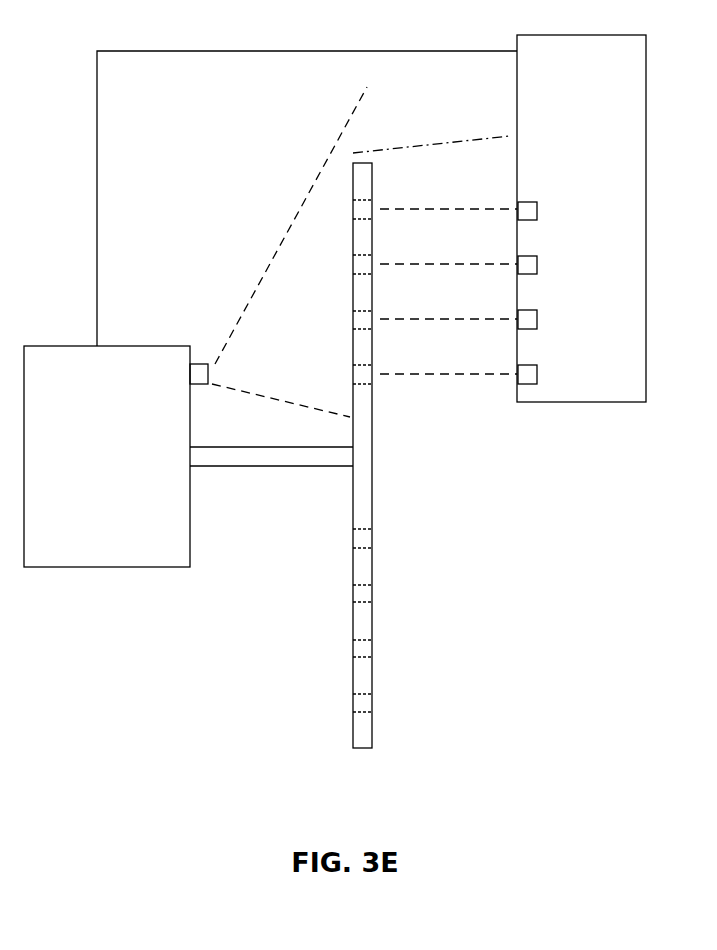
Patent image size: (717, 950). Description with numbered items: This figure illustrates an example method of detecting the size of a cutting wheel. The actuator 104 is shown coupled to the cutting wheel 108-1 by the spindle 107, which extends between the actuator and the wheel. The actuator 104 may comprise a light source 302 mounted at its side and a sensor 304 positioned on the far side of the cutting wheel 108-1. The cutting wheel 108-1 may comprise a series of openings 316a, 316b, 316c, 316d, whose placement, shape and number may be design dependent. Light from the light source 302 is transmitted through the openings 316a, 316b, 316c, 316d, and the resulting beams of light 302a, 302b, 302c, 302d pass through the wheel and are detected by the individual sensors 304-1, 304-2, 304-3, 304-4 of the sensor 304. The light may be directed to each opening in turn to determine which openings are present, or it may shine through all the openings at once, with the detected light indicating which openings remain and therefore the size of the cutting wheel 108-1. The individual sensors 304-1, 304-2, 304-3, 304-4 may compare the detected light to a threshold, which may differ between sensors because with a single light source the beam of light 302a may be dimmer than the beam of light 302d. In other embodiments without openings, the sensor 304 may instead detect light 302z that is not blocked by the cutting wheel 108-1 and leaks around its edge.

The actuator 104 is at (107, 456).
The spindle 107 is at (262, 492).
The cutting wheel 108-1 is at (289, 463).
The light source 302 is at (210, 332).
The beam of light 302a is at (448, 198).
The beam of light 302b is at (448, 253).
The beam of light 302c is at (448, 308).
The beam of light 302d is at (448, 363).
The light 302z is at (431, 134).
The sensor 304 is at (371, 218).
The individual sensor 304-1 is at (559, 210).
The individual sensor 304-2 is at (559, 265).
The individual sensor 304-3 is at (559, 320).
The individual sensor 304-4 is at (559, 375).
The opening 316a is at (396, 703).
The opening 316b is at (396, 648).
The opening 316c is at (396, 598).
The opening 316d is at (396, 543).